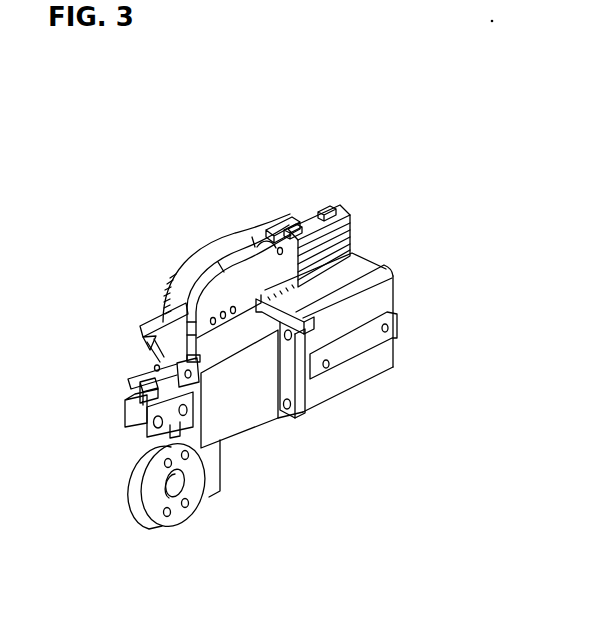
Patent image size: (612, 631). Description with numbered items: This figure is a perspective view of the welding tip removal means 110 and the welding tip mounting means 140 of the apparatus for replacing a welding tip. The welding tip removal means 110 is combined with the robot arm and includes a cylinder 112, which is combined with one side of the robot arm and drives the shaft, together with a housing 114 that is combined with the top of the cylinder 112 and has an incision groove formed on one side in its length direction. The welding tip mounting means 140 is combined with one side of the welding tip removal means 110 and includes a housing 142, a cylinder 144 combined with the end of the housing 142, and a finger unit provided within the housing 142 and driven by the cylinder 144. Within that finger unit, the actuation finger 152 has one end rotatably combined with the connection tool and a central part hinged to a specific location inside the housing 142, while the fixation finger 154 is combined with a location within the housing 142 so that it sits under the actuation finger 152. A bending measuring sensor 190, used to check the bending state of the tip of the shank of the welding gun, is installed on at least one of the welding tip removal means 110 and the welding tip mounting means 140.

The welding tip removal means 110 is at (380, 428).
The cylinder 112 is at (357, 341).
The housing 114 is at (233, 406).
The welding tip mounting means 140 is at (266, 178).
The housing 142 is at (217, 258).
The cylinder 144 is at (350, 213).
The actuation finger 152 is at (151, 320).
The fixation finger 154 is at (128, 379).
The bending measuring sensor 190 is at (110, 533).